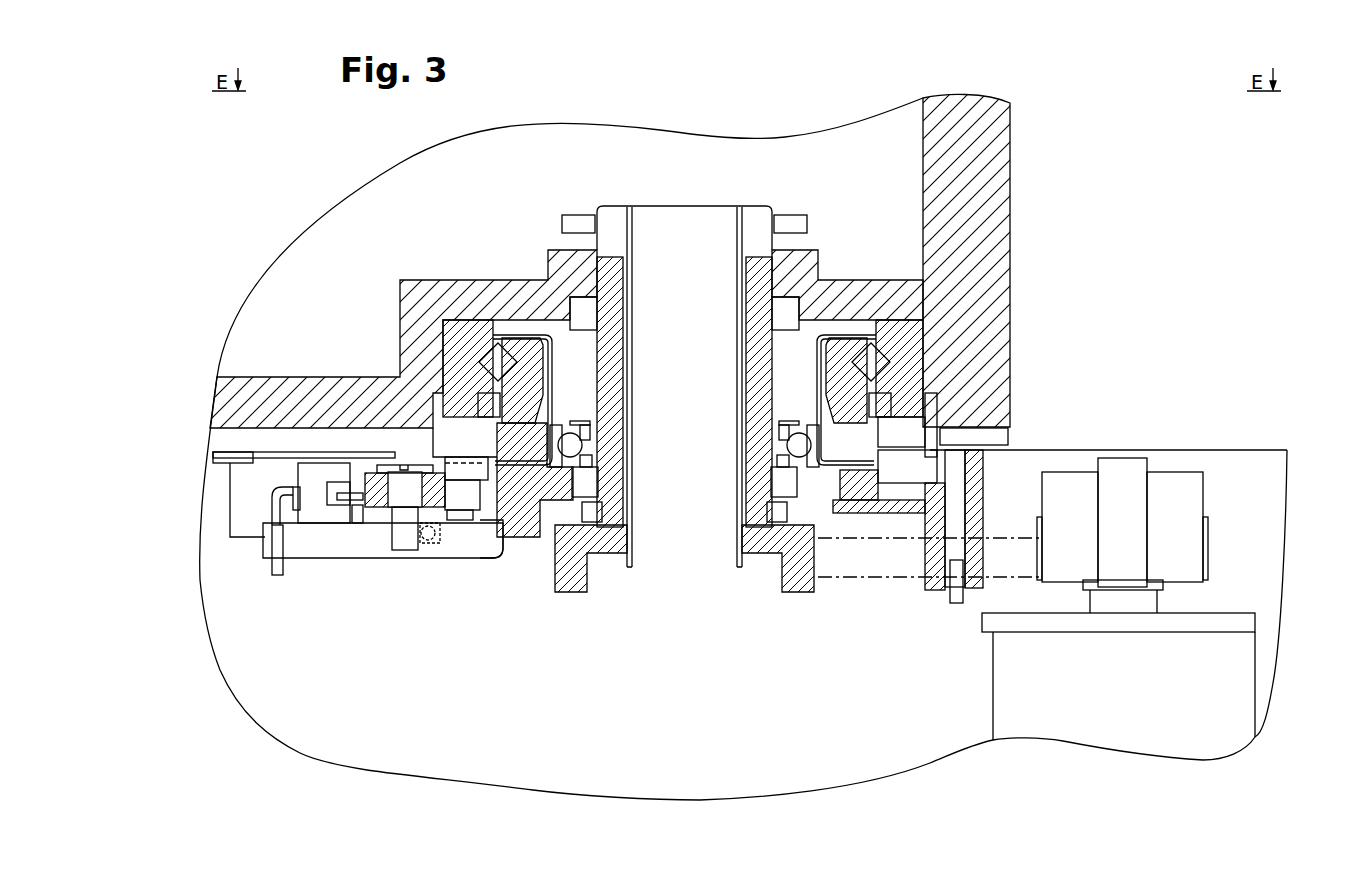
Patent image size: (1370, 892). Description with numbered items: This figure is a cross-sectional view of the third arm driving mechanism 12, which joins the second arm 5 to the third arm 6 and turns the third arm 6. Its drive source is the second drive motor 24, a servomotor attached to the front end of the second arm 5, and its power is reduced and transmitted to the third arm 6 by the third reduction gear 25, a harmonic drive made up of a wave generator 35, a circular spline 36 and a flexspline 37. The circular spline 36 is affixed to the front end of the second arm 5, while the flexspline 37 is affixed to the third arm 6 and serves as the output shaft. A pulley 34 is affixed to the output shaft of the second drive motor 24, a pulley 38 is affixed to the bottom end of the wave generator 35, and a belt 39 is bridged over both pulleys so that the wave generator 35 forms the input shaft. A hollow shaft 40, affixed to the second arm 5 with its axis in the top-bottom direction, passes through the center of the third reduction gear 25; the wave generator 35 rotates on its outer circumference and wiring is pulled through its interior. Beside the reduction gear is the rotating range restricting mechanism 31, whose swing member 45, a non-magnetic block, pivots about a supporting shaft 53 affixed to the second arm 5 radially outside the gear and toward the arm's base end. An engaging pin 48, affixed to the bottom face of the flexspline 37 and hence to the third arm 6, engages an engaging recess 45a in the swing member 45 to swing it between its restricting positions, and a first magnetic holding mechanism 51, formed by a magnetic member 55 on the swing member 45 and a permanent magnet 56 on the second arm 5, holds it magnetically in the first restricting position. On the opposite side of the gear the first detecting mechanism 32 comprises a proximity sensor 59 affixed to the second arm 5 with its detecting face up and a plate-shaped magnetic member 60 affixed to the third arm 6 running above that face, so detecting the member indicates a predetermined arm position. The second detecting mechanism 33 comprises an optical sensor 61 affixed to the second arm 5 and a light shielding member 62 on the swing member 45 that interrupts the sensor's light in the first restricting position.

The second arm 5 is at (1231, 450).
The third arm 6 is at (1012, 203).
The third arm driving mechanism 12 is at (636, 663).
The second drive motor 24 is at (992, 689).
The third reduction gear 25 is at (815, 188).
The rotating range restricting mechanism 31 is at (403, 678).
The first detecting mechanism 32 is at (988, 490).
The second detecting mechanism 33 is at (321, 564).
The pulley 34 is at (1210, 548).
The wave generator 35 is at (760, 252).
The circular spline 36 is at (841, 333).
The flexspline 37 is at (908, 322).
The pulley 38 is at (797, 593).
The belt 39 is at (862, 578).
The hollow shaft 40 is at (617, 230).
The swing member 45 is at (380, 510).
The engaging recess 45a is at (472, 522).
The engaging pin 48 is at (487, 522).
The first magnetic holding mechanism 51 is at (454, 562).
The supporting shaft 53 is at (402, 552).
The magnetic member 55 is at (458, 522).
The permanent magnet 56 is at (428, 545).
The proximity sensor 59 is at (966, 498).
The magnetic member 60 is at (1008, 442).
The optical sensor 61 is at (314, 530).
The light shielding member 62 is at (350, 530).